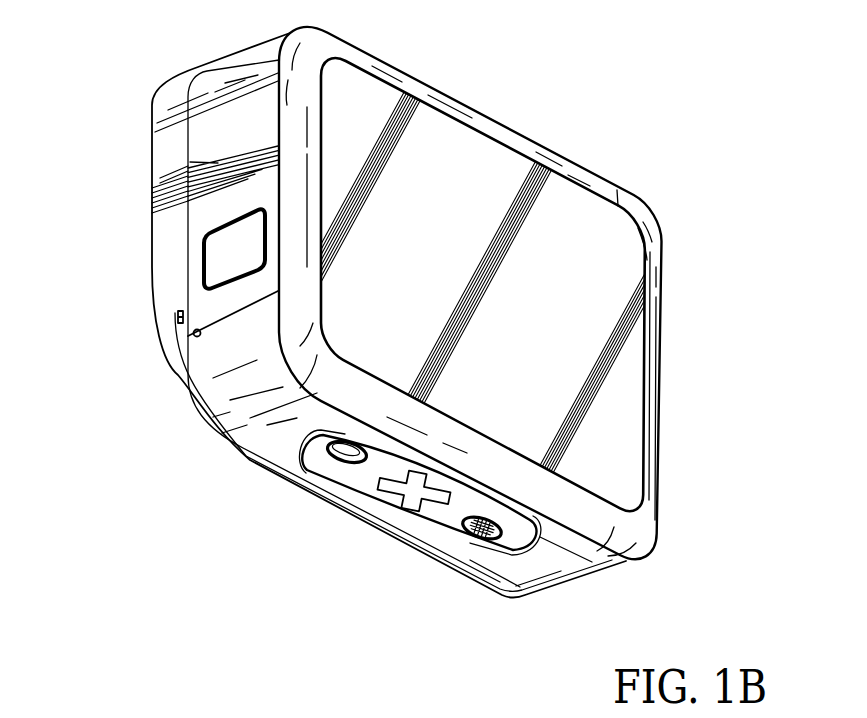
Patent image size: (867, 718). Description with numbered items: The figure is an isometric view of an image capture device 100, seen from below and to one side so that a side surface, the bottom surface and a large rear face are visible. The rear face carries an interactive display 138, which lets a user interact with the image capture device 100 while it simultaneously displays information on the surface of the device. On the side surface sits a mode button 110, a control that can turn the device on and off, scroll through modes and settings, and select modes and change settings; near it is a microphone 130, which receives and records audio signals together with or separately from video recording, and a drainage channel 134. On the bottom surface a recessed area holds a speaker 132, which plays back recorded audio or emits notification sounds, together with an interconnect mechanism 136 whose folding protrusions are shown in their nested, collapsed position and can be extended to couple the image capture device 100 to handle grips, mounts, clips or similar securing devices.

The image capture device 100 is at (644, 112).
The mode button 110 is at (217, 253).
The microphone 130 is at (192, 336).
The speaker 132 is at (483, 542).
The drainage channel 134 is at (178, 317).
The interconnect mechanism 136 is at (342, 478).
The interactive display 138 is at (618, 407).